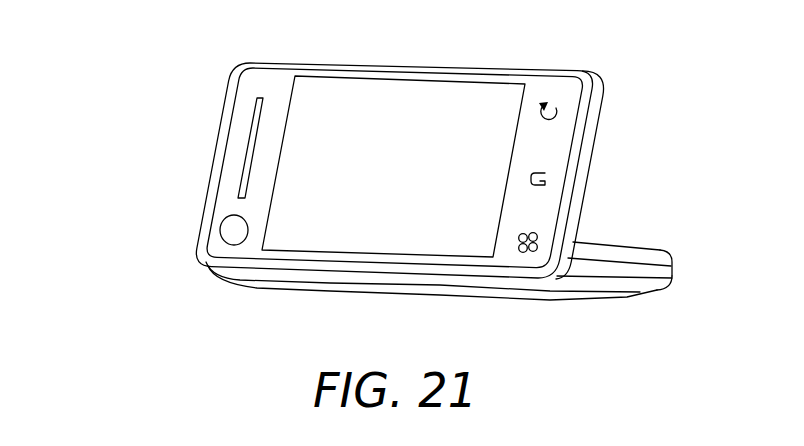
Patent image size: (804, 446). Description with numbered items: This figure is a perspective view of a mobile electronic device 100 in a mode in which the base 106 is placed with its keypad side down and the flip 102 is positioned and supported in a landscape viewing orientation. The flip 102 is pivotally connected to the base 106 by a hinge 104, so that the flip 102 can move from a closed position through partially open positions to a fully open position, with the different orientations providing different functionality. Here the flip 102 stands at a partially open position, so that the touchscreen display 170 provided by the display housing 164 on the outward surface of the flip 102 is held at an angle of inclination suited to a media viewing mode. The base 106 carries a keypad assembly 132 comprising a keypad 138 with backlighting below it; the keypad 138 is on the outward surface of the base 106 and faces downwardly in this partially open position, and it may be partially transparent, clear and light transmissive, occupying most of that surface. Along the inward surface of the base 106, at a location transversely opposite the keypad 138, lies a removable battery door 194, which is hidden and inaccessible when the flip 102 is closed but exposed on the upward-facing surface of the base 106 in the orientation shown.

The mobile electronic device 100 is at (139, 148).
The flip 102 is at (595, 79).
The hinge 104 is at (287, 284).
The base 106 is at (674, 266).
The keypad assembly 132 is at (633, 295).
The keypad 138 is at (551, 300).
The display housing 164 is at (454, 82).
The touchscreen display 170 is at (337, 100).
The removable battery door 194 is at (624, 243).